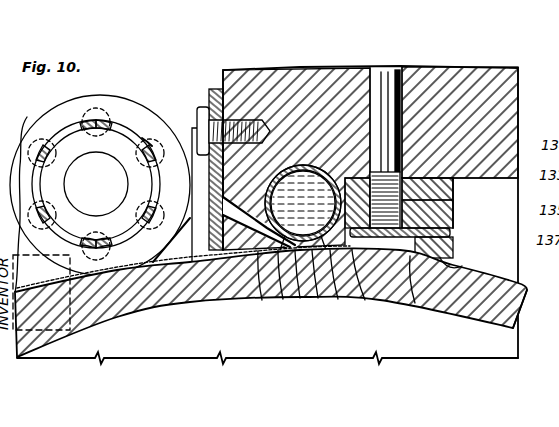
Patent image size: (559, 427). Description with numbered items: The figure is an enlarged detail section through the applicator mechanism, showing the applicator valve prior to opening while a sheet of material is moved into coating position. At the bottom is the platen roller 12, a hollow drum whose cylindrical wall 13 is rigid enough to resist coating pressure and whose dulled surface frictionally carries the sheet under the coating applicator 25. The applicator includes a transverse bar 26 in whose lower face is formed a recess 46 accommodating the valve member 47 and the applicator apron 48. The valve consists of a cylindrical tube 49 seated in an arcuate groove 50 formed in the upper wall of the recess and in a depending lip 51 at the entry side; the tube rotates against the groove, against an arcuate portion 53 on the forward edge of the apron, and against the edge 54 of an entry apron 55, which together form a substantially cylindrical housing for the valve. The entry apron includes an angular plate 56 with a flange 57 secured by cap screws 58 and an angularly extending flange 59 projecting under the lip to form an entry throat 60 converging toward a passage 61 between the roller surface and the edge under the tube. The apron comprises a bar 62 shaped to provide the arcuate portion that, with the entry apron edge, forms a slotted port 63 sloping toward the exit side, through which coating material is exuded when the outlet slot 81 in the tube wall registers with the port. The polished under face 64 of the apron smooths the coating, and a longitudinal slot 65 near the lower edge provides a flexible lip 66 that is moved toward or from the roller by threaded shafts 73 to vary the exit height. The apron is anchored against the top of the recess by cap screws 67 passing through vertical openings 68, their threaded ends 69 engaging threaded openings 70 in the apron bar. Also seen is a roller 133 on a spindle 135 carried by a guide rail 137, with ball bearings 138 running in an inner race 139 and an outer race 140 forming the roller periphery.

The platen roller 12 is at (507, 280).
The cylindrical wall 13 is at (497, 306).
The coating applicator 25 is at (222, 84).
The bar 26 is at (519, 80).
The recess 46 is at (268, 232).
The valve member 47 is at (285, 299).
The applicator apron 48 is at (453, 214).
The cylindrical tube 49 is at (300, 300).
The arcuate groove 50 is at (158, 160).
The depending lip 51 is at (223, 208).
The arcuate portion 53 is at (360, 150).
The edge 54 is at (242, 297).
The entry apron 55 is at (112, 243).
The angular plate 56 is at (150, 190).
The flange 57 is at (150, 172).
The cap screws 58 is at (212, 100).
The angularly extending flange 59 is at (225, 240).
The entry throat 60 is at (258, 300).
The passage 61 is at (318, 299).
The bar 62 is at (453, 192).
The slotted port 63 is at (335, 299).
The under face 64 is at (456, 274).
The longitudinal slot 65 is at (452, 233).
The flexible lip 66 is at (453, 249).
The cap screws 67 is at (376, 72).
The vertical openings 68 is at (400, 70).
The threaded ends 69 is at (386, 172).
The threaded openings 70 is at (479, 203).
The threaded shafts 73 is at (412, 280).
The outlet slot 81 is at (355, 299).
The roller 133 is at (33, 115).
The spindle 135 is at (77, 169).
The guide rail 137 is at (192, 128).
The ball bearings 138 is at (75, 122).
The race 139 is at (147, 148).
The race 140 is at (103, 95).